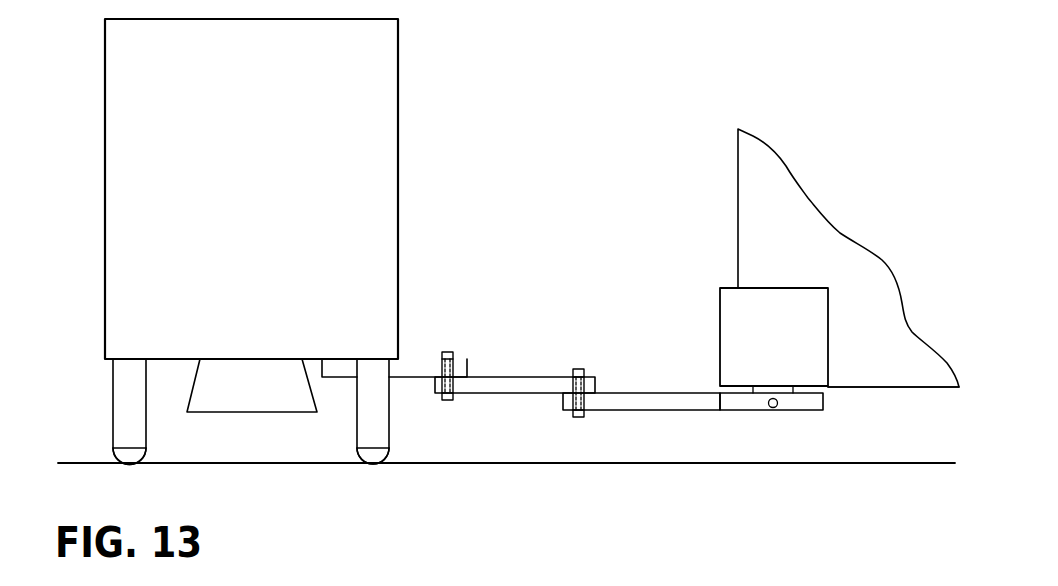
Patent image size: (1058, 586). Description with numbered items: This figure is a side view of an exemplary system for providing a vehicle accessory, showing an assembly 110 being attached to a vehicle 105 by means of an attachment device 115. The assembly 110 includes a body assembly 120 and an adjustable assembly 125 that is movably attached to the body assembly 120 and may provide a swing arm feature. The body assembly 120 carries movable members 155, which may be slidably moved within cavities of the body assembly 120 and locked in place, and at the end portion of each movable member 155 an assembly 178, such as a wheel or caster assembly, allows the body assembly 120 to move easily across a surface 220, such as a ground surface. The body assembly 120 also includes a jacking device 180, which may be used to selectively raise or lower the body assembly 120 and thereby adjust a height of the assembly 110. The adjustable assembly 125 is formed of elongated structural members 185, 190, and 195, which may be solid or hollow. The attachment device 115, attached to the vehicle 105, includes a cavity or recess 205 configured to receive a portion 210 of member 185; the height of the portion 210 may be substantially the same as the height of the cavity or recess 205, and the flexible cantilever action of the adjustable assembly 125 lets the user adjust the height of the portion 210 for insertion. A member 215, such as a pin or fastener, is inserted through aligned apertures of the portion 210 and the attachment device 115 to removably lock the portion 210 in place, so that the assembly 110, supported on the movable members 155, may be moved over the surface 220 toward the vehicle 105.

The vehicle 105 is at (840, 207).
The assembly 110 is at (533, 247).
The attachment device 115 is at (820, 402).
The body assembly 120 is at (427, 113).
The adjustable assembly 125 is at (532, 358).
The movable member 155 is at (127, 392).
The assembly 178 is at (128, 452).
The jacking device 180 is at (273, 417).
The member 185 is at (627, 398).
The member 190 is at (482, 382).
The member 195 is at (422, 364).
The cavity or recess 205 is at (714, 382).
The portion 210 is at (695, 398).
The member 215 is at (775, 410).
The surface 220 is at (488, 463).